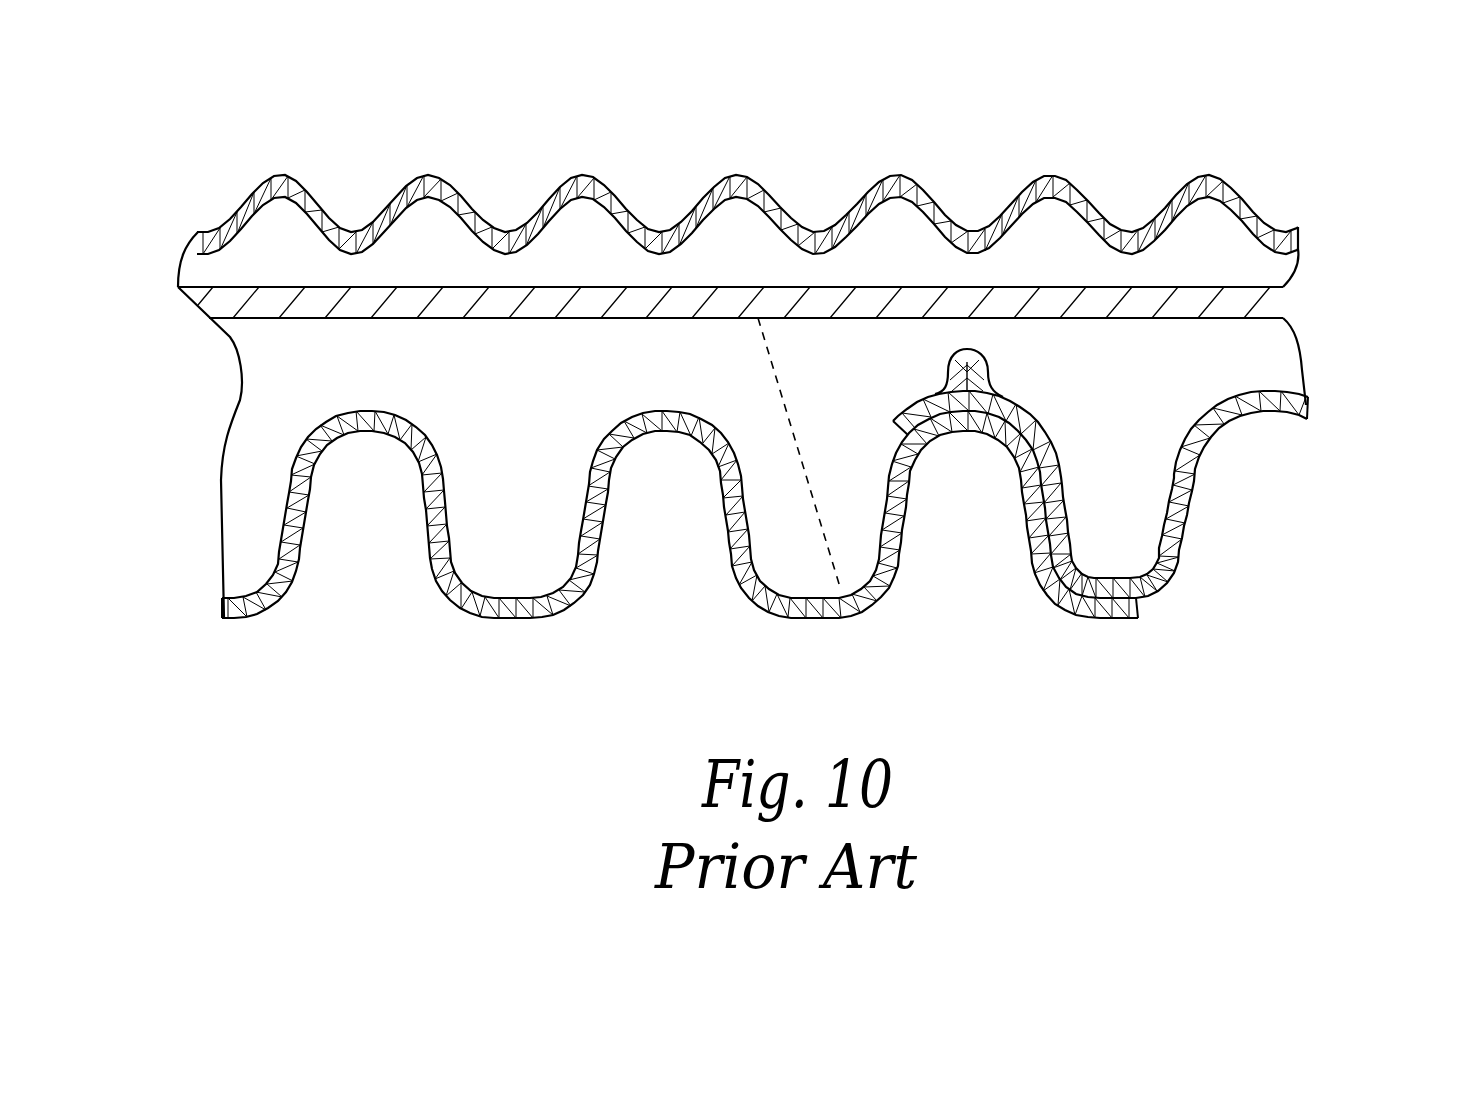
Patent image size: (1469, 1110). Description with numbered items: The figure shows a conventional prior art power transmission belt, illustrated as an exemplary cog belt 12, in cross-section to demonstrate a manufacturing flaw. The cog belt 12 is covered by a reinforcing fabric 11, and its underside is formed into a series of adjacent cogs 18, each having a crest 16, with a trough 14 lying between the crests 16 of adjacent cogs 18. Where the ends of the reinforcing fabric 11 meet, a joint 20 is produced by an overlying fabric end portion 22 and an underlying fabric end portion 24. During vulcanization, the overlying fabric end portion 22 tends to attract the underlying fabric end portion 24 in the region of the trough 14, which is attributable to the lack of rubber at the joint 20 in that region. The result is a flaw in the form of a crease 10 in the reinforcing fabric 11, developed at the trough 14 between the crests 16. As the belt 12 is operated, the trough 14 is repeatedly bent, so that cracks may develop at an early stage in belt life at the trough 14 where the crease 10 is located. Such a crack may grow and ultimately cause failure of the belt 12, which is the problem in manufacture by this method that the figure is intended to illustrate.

The crease 10 is at (966, 330).
The reinforcing fabric 11 is at (513, 621).
The cog belt 12 is at (1335, 288).
The trough 14 is at (1000, 372).
The crests 16 is at (770, 502).
The cogs 18 is at (795, 569).
The joint 20 is at (926, 384).
The overlying fabric end portion 22 is at (1033, 518).
The underlying fabric end portion 24 is at (1043, 434).